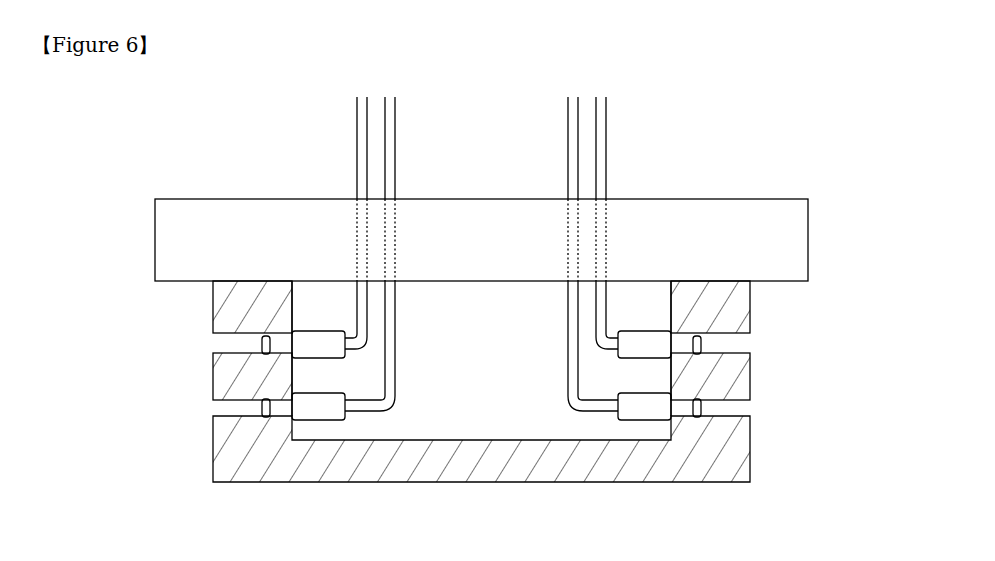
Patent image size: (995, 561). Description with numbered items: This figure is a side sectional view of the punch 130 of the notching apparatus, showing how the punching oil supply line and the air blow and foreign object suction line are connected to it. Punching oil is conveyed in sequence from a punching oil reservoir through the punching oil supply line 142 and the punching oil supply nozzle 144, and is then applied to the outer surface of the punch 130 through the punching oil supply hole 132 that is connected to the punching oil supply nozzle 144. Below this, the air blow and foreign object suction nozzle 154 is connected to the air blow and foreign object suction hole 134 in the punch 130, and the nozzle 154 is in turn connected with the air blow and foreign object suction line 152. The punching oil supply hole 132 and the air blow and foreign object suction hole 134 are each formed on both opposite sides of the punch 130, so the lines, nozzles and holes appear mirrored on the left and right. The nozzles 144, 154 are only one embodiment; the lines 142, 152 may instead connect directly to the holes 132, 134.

The punch 130 is at (213, 460).
The punching oil supply hole 132 is at (217, 343).
The air blow and foreign object suction hole 134 is at (223, 407).
The punching oil supply line 142 is at (365, 128).
The punching oil supply nozzle 144 is at (318, 343).
The air blow and foreign object suction line 152 is at (375, 405).
The air blow and foreign object suction nozzle 154 is at (322, 405).